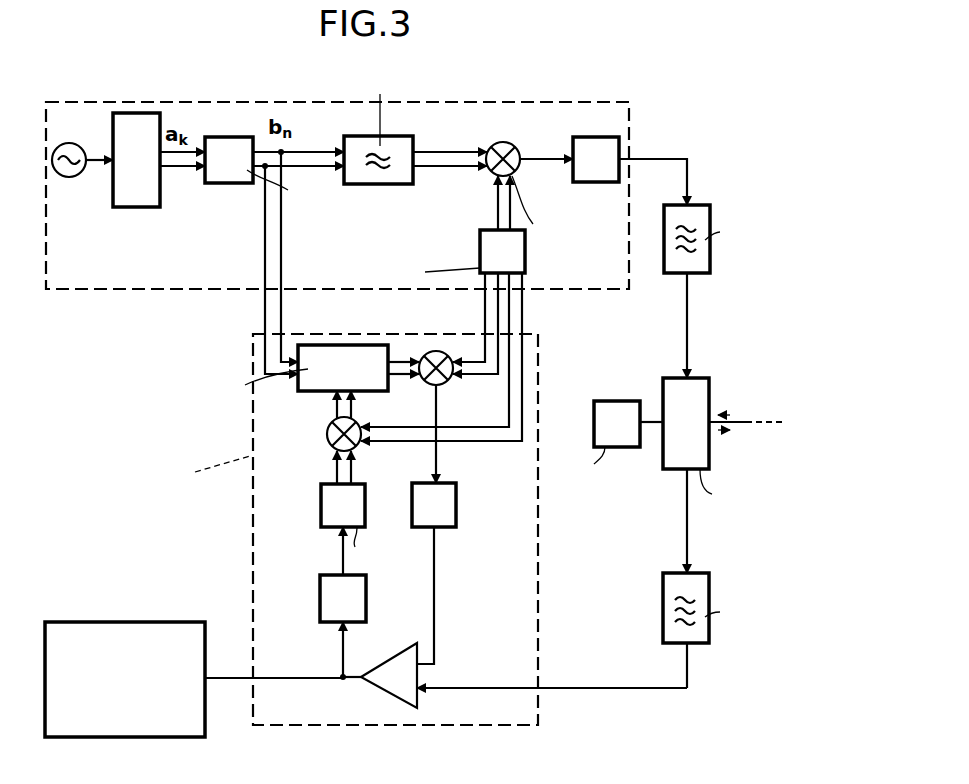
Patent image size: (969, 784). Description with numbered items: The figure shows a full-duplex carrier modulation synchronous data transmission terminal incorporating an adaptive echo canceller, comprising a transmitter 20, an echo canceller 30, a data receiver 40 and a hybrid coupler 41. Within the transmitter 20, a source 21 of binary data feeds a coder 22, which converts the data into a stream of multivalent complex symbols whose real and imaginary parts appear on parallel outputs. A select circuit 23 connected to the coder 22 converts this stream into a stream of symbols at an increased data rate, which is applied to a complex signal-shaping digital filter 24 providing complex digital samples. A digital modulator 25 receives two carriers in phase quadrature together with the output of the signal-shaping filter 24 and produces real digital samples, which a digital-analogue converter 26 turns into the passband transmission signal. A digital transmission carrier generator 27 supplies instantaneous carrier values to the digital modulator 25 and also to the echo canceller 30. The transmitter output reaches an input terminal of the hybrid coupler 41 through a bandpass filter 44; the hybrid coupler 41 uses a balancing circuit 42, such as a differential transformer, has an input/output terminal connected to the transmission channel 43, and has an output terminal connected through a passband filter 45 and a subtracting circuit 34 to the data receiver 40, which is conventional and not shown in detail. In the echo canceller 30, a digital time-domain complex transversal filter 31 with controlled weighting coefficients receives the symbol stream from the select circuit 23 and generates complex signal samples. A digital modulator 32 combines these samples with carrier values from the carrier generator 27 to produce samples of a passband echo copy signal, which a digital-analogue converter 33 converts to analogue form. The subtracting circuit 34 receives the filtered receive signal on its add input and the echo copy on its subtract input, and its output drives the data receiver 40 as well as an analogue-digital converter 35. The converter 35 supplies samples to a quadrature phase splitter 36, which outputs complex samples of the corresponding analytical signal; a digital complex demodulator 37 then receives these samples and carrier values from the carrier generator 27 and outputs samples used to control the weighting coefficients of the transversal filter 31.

The transmitter 20 is at (140, 290).
The source 21 is at (66, 178).
The coder 22 is at (143, 207).
The select circuit 23 is at (222, 183).
The complex signal-shaping digital filter 24 is at (385, 184).
The digital modulator 25 is at (517, 170).
The digital-analogue converter 26 is at (590, 182).
The digital transmission carrier generator 27 is at (480, 250).
The echo canceller 30 is at (253, 536).
The digital time-domain complex transversal filter 31 is at (318, 391).
The digital modulator 32 is at (428, 384).
The digital-analogue converter 33 is at (456, 510).
The subtracting circuit 34 is at (398, 655).
The analogue-digital converter 35 is at (320, 596).
The quadrature phase splitter 36 is at (321, 506).
The digital complex demodulator 37 is at (327, 439).
The data receiver 40 is at (147, 622).
The hybrid coupler 41 is at (675, 378).
The balancing circuit 42 is at (625, 401).
The transmission channel 43 is at (762, 400).
The bandpass filter 44 is at (675, 273).
The passband filter 45 is at (663, 610).